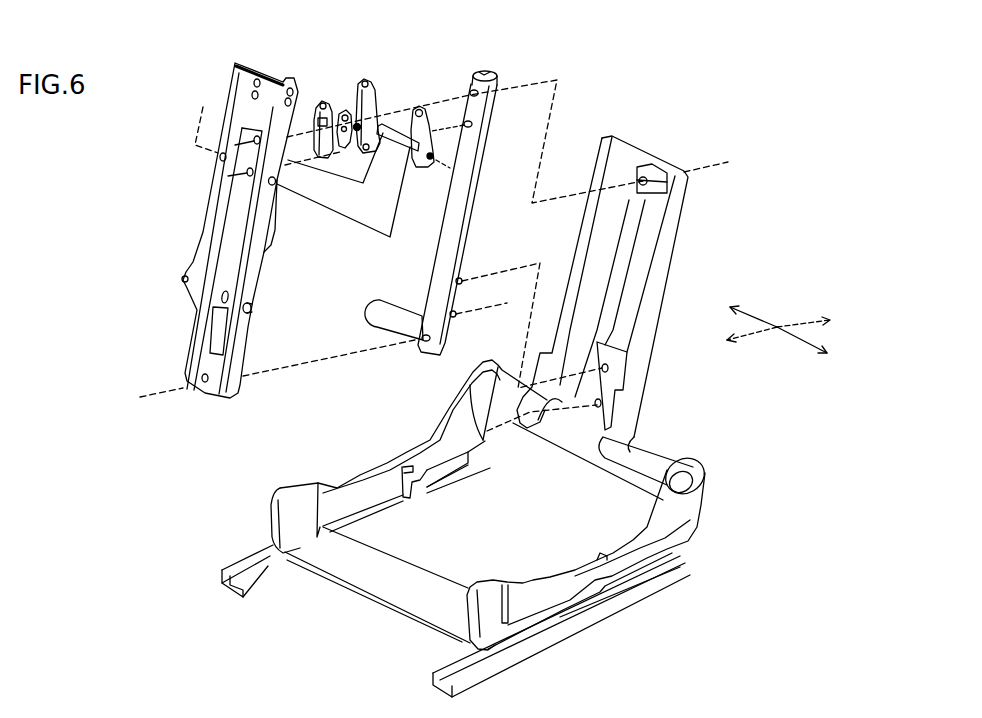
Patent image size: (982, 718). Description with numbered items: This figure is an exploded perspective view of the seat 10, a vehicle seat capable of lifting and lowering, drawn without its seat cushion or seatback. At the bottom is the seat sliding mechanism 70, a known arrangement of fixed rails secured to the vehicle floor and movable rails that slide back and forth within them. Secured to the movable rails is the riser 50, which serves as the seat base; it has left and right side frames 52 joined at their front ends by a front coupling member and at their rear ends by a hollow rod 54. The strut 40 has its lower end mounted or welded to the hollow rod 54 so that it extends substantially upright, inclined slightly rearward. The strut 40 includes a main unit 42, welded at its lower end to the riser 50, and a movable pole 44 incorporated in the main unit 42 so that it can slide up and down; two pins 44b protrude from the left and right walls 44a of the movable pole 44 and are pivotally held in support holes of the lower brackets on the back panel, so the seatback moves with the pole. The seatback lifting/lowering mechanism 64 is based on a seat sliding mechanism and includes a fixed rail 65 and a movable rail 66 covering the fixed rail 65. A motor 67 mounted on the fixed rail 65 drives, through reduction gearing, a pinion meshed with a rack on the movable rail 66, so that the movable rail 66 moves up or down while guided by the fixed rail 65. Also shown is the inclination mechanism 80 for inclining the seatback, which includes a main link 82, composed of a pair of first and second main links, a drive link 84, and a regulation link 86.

The seat 10 is at (185, 51).
The strut 40 is at (692, 268).
The main unit 42 is at (673, 212).
The movable pole 44 is at (203, 226).
The left and right walls 44a is at (269, 228).
The pins 44b is at (256, 309).
The riser 50 is at (316, 455).
The side frames 52 is at (670, 518).
The hollow rod 54 is at (654, 453).
The seatback lifting/lowering mechanism 64 is at (504, 152).
The fixed rail 65 is at (494, 73).
The movable rail 66 is at (457, 217).
The motor 67 is at (390, 313).
The seat sliding mechanism 70 is at (620, 610).
The inclination mechanism 80 is at (405, 89).
The main link 82 is at (365, 82).
The drive link 84 is at (344, 112).
The regulation link 86 is at (322, 106).